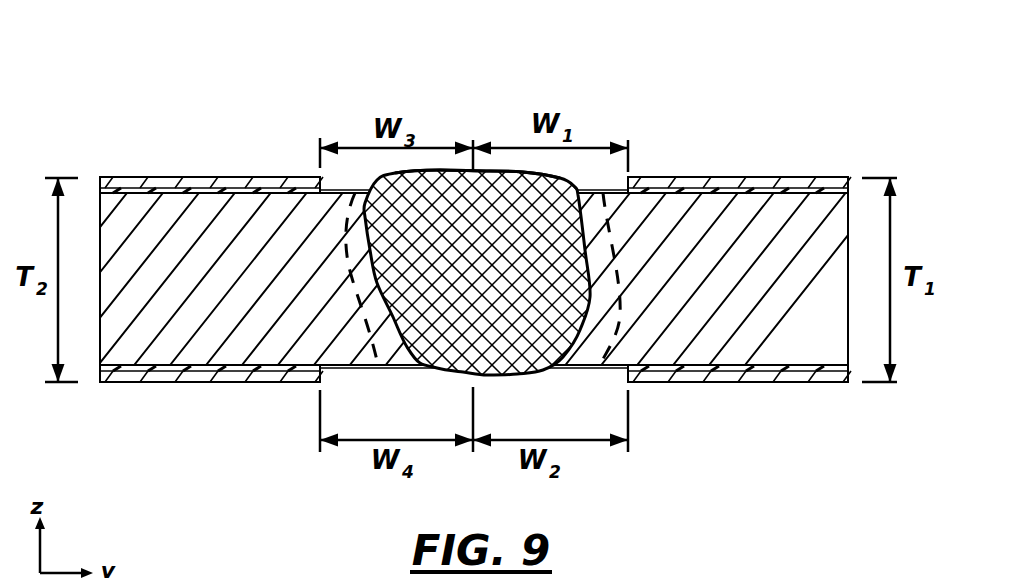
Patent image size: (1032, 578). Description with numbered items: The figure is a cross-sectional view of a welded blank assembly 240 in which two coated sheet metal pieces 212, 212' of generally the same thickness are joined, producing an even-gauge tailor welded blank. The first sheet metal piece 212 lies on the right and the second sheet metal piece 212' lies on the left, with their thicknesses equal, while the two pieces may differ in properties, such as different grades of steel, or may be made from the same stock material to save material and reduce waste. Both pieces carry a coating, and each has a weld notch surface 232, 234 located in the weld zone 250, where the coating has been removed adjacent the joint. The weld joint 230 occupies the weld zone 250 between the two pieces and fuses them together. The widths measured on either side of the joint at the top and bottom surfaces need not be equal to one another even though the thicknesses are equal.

The welded blank assembly 240 is at (832, 90).
The sheet metal piece 212' is at (211, 236).
The sheet metal piece 212 is at (739, 241).
The weld notch surface 232 is at (631, 180).
The weld joint 230 is at (553, 178).
The weld notch surface 234 is at (603, 195).
The weld zone 250 is at (514, 130).